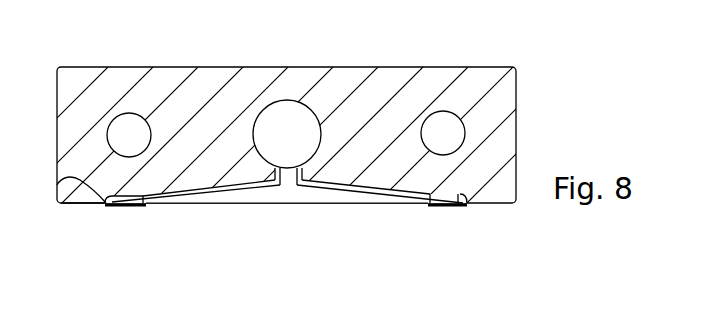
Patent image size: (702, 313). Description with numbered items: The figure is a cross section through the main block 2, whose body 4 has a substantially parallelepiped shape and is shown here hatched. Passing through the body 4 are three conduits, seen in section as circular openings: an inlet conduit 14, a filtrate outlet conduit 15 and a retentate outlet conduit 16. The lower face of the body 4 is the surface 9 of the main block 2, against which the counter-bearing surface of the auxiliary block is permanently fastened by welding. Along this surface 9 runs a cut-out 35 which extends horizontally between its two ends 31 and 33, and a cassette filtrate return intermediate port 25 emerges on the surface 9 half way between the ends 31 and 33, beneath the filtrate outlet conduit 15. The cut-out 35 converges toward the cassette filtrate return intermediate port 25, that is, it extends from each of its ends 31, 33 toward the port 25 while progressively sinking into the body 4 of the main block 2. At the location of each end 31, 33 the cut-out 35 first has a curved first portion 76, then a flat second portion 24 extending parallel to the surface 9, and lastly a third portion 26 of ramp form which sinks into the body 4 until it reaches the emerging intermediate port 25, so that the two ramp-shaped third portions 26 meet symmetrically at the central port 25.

The main block 2 is at (526, 98).
The body 4 is at (354, 77).
The surface 9 is at (72, 204).
The inlet conduit 14 is at (116, 108).
The filtrate outlet conduit 15 is at (268, 105).
The retentate outlet conduit 16 is at (430, 107).
The flat second portion 24 is at (132, 196).
The cassette filtrate return intermediate port 25 is at (291, 200).
The third portion 26 is at (198, 190).
The end 31 is at (110, 216).
The end 33 is at (464, 218).
The cut-out 35 is at (235, 199).
The curved first portion 76 is at (58, 184).